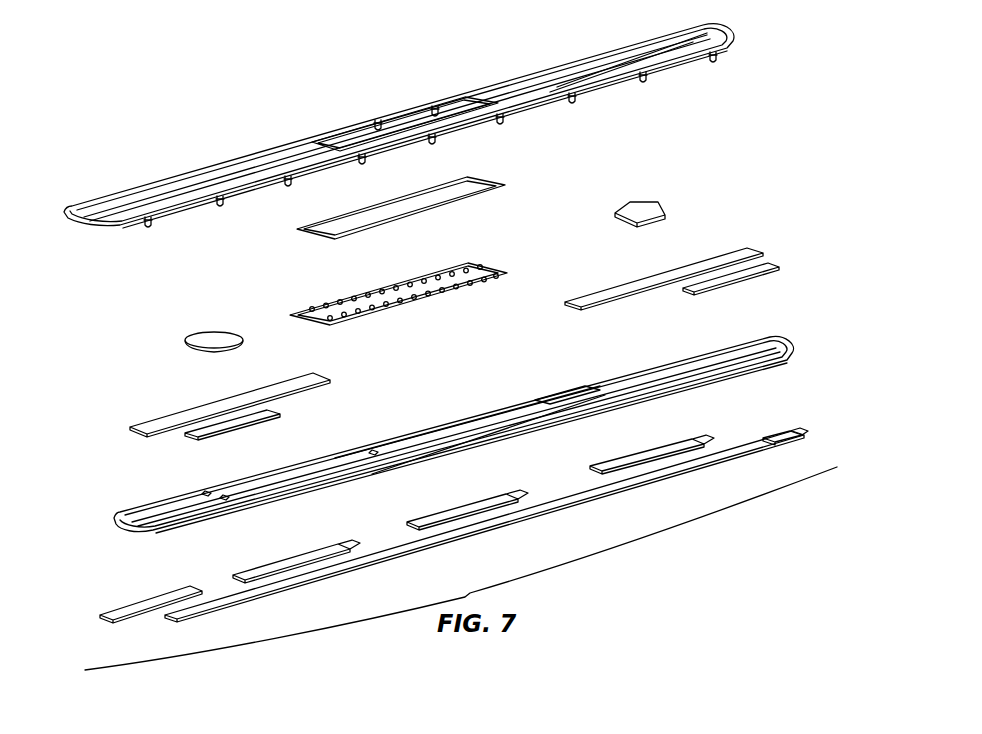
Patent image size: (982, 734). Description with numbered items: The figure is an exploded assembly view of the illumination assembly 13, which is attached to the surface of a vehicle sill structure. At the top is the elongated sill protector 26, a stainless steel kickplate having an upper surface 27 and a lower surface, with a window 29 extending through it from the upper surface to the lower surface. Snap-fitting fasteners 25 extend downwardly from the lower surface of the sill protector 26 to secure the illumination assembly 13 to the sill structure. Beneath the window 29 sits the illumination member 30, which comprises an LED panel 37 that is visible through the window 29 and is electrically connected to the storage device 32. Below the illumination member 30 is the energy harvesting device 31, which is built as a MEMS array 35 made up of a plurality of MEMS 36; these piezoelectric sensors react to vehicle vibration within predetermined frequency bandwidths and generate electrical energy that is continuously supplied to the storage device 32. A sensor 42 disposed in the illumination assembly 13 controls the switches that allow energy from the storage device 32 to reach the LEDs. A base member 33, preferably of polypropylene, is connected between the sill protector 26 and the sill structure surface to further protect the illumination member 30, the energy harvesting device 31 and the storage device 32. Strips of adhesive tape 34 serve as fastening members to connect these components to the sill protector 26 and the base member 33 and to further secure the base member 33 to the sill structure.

The illumination assembly 13 is at (303, 637).
The snap-fitting fasteners 25 is at (148, 226).
The sill protector 26 is at (262, 148).
The upper surface 27 is at (537, 85).
The window 29 is at (500, 102).
The illumination member 30 is at (463, 203).
The energy harvesting device 31 is at (428, 297).
The storage device 32 is at (183, 342).
The base member 33 is at (740, 373).
The adhesive tape 34 is at (757, 249).
The MEMS array 35 is at (331, 298).
The MEMS 36 is at (418, 277).
The LED panel 37 is at (485, 178).
The sensor 42 is at (666, 208).